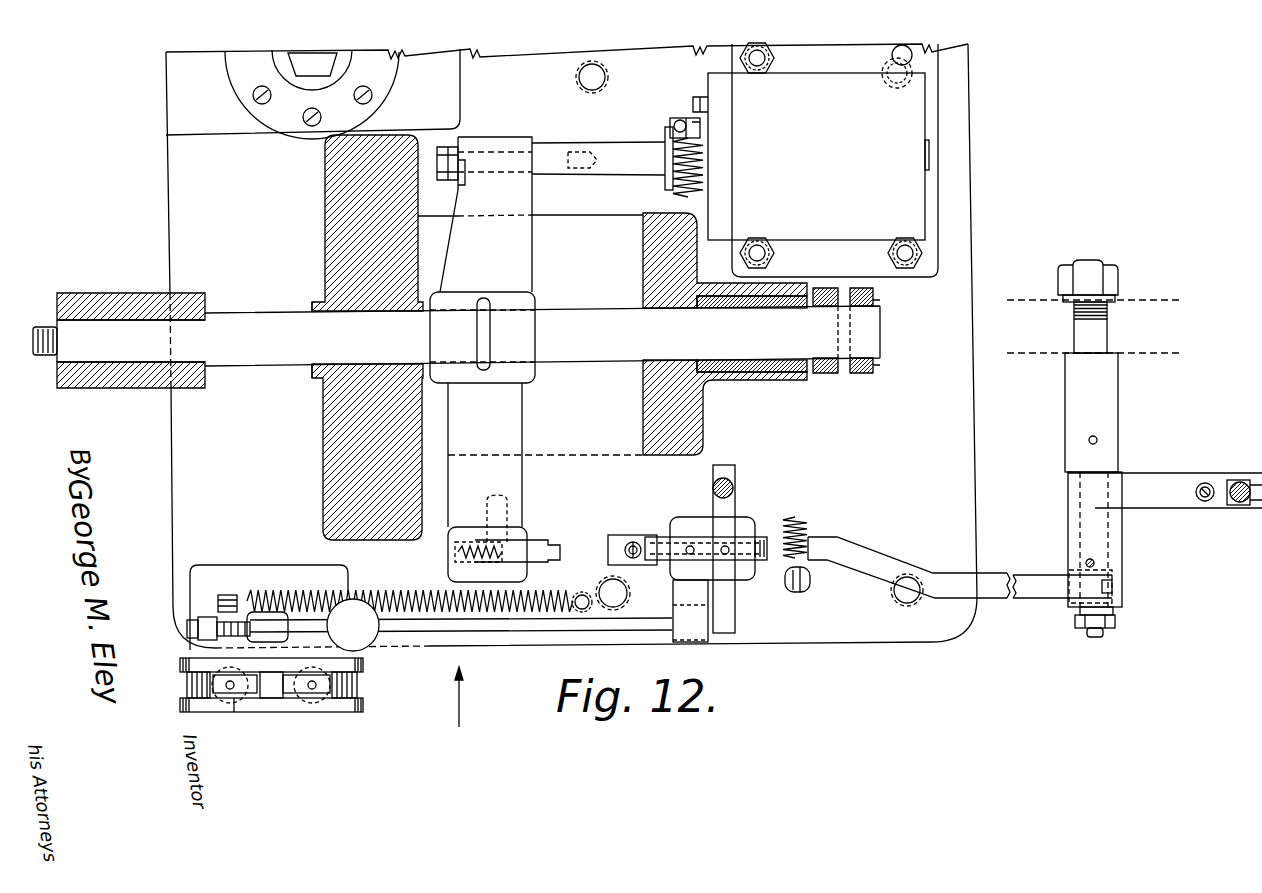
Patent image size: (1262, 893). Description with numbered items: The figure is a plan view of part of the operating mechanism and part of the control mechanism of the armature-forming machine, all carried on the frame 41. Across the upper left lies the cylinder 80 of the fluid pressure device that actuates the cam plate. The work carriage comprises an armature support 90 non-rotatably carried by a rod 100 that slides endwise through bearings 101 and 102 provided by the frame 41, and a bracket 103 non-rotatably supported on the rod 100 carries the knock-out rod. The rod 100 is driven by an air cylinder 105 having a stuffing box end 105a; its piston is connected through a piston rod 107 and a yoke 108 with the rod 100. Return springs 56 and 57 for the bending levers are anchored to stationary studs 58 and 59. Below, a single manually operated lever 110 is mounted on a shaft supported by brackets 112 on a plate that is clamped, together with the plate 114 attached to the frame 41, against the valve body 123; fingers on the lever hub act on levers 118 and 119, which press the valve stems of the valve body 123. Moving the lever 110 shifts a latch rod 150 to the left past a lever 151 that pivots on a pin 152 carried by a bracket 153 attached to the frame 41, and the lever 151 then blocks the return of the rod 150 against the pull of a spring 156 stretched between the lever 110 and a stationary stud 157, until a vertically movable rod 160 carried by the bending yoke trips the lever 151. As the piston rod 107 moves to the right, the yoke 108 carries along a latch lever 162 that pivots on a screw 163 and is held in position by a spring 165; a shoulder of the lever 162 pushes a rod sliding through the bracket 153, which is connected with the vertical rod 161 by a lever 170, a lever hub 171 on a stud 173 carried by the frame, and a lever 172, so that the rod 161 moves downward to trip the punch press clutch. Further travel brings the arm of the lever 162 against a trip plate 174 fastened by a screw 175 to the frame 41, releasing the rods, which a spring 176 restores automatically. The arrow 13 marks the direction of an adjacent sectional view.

The frame 41 is at (172, 517).
The cylinder 80 is at (250, 72).
The air cylinder 105 is at (830, 78).
The stuffing box end 105a is at (708, 86).
The stationary stud 59 is at (705, 124).
The spring 57 is at (702, 162).
The piston rod 107 is at (618, 148).
The yoke 108 is at (518, 250).
The armature support 90 is at (108, 306).
The rod 100 is at (251, 313).
The bearing 101 is at (310, 378).
The bearing 102 is at (791, 372).
The bracket 103 is at (875, 370).
The screw 163 is at (509, 500).
The spring 165 is at (470, 543).
The latch lever 162 is at (535, 545).
The stationary stud 157 is at (584, 594).
The trip plate 174 is at (618, 536).
The screw 175 is at (633, 542).
The pin 152 is at (689, 540).
The bracket 153 is at (675, 518).
The lever 151 is at (736, 502).
The vertically movable rod 160 is at (733, 488).
The spring 56 is at (810, 525).
The stationary stud 58 is at (812, 590).
The rod 161 is at (1040, 590).
The stud 173 is at (1073, 398).
The lever hub 171 is at (1070, 530).
The lever 172 is at (1172, 480).
The spring 176 is at (1207, 501).
The lever 170 is at (1104, 573).
The plate 114 is at (231, 573).
The spring 156 is at (405, 596).
The latch rod 150 is at (531, 633).
The manually operated lever 110 is at (360, 643).
The brackets 112 is at (179, 664).
The lever 118 is at (252, 693).
The lever 119 is at (290, 693).
The valve body 123 is at (240, 744).
The section line 13 is at (471, 697).